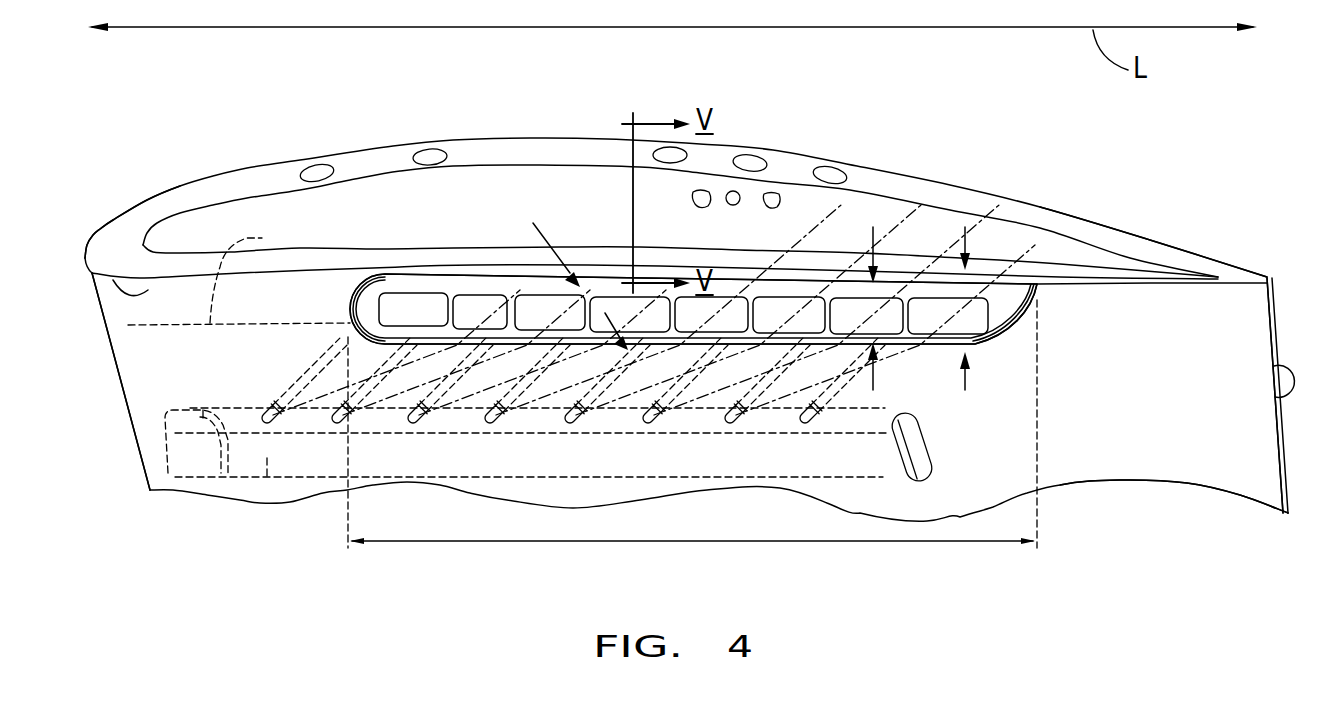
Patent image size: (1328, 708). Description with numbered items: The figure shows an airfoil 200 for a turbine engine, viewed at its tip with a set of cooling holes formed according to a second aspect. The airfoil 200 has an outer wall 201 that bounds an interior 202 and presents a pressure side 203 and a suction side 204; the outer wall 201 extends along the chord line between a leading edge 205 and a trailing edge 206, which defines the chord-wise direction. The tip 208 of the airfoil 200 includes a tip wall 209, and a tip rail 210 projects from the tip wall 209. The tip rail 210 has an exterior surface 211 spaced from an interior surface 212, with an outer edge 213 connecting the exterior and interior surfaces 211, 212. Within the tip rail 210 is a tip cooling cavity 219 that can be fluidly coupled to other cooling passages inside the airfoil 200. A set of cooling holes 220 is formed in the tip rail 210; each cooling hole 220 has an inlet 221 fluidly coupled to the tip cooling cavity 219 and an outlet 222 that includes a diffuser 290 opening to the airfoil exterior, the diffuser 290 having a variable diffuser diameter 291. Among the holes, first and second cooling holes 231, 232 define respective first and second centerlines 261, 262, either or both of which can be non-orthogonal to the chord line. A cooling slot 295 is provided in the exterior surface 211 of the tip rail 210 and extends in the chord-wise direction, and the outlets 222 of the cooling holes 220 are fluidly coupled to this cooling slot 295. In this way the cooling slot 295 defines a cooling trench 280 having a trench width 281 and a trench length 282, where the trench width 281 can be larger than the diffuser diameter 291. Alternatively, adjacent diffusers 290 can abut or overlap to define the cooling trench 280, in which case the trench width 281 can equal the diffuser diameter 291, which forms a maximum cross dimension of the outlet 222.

The airfoil 200 is at (1142, 530).
The outer wall 201 is at (1212, 468).
The interior 202 is at (1142, 404).
The pressure side 203 is at (1143, 284).
The suction side 204 is at (1155, 238).
The leading edge 205 is at (115, 372).
The trailing edge 206 is at (1283, 398).
The tip 208 is at (153, 448).
The tip wall 209 is at (261, 271).
The tip rail 210 is at (156, 216).
The exterior surface 211 is at (128, 326).
The interior surface 212 is at (342, 217).
The outer edge 213 is at (280, 173).
The tip cooling cavity 219 is at (263, 490).
The cooling holes 220 is at (290, 366).
The inlet 221 is at (272, 421).
The outlet 222 is at (416, 312).
The first cooling hole 231 is at (622, 398).
The second cooling hole 232 is at (698, 400).
The first centerline 261 is at (807, 236).
The second centerline 262 is at (878, 255).
The cooling trench 280 is at (1034, 294).
The cooling slot 295 is at (693, 309).
The trench width 281 is at (967, 385).
The trench length 282 is at (862, 542).
The diffuser 290 is at (508, 385).
The diffuser diameter 291 is at (545, 232).